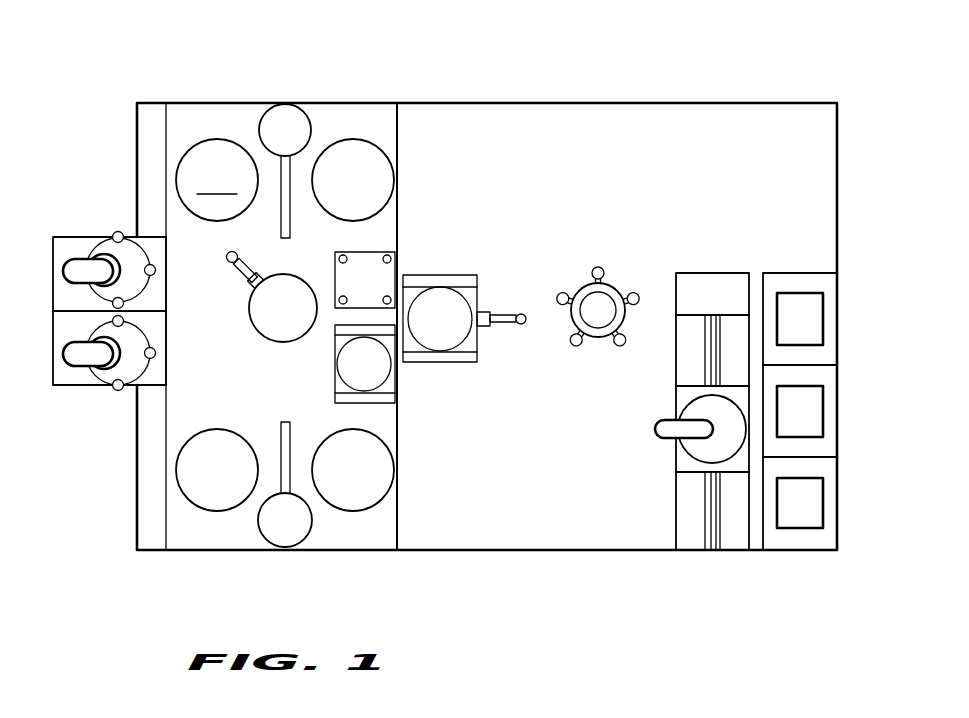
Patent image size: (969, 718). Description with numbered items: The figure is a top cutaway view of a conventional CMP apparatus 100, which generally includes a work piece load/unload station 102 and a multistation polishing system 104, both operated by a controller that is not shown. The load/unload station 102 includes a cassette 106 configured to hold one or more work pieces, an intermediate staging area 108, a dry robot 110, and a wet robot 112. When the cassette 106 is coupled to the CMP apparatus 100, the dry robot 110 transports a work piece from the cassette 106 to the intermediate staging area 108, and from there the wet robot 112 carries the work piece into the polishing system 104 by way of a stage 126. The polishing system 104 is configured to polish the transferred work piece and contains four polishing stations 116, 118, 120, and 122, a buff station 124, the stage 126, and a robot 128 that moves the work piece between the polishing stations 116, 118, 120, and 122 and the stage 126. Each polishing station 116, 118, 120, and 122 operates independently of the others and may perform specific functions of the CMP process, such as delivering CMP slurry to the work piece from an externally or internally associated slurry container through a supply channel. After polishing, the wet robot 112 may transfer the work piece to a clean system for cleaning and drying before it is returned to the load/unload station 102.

The CMP apparatus 100 is at (505, 633).
The work piece load/unload station 102 is at (809, 577).
The multistation polishing system 104 is at (181, 66).
The cassette 106 is at (823, 319).
The intermediate staging area 108 is at (600, 338).
The dry robot 110 is at (688, 453).
The wet robot 112 is at (450, 363).
The polishing station 116 is at (91, 211).
The polishing station 118 is at (333, 194).
The polishing station 120 is at (197, 484).
The polishing station 122 is at (333, 484).
The buff station 124 is at (63, 271).
The stage 126 is at (335, 380).
The robot 128 is at (251, 312).